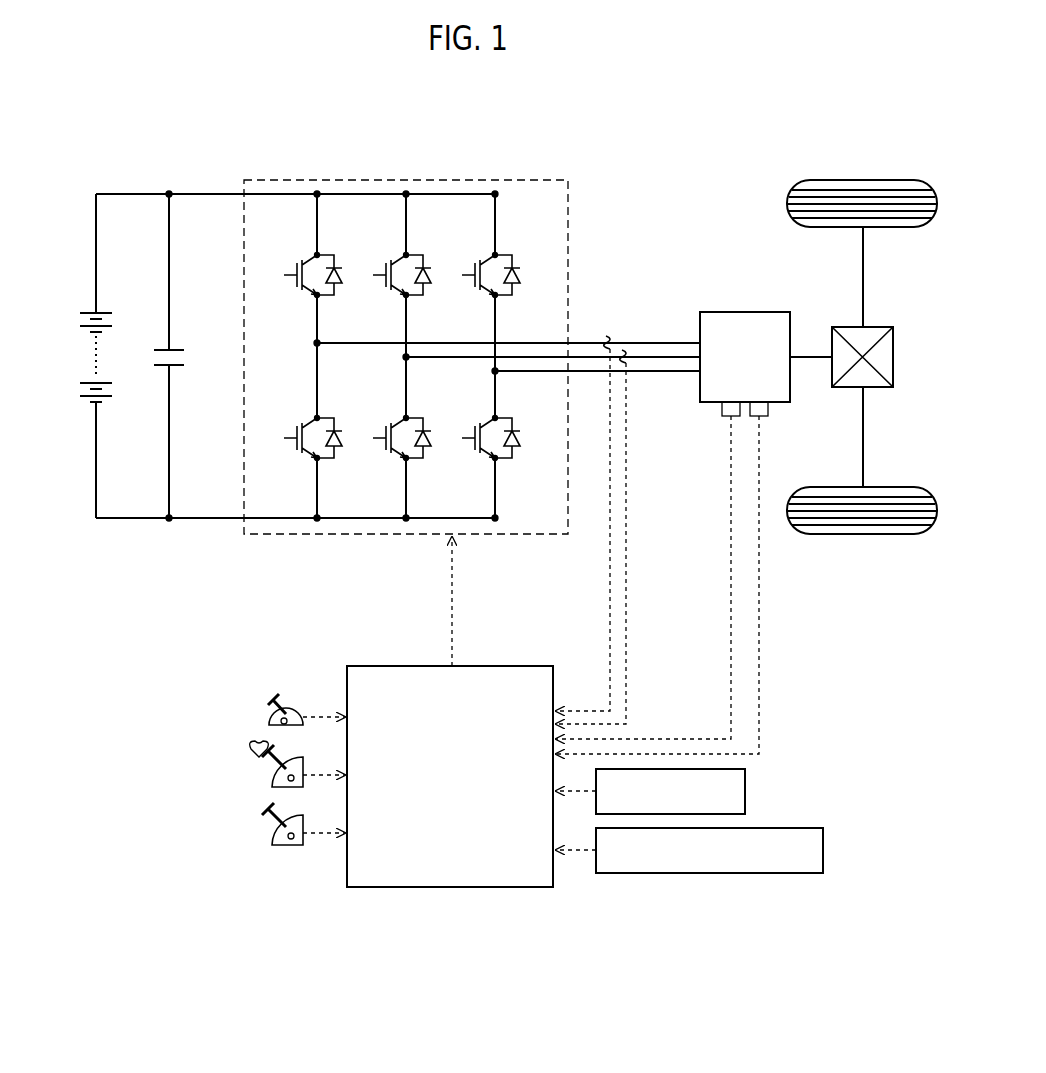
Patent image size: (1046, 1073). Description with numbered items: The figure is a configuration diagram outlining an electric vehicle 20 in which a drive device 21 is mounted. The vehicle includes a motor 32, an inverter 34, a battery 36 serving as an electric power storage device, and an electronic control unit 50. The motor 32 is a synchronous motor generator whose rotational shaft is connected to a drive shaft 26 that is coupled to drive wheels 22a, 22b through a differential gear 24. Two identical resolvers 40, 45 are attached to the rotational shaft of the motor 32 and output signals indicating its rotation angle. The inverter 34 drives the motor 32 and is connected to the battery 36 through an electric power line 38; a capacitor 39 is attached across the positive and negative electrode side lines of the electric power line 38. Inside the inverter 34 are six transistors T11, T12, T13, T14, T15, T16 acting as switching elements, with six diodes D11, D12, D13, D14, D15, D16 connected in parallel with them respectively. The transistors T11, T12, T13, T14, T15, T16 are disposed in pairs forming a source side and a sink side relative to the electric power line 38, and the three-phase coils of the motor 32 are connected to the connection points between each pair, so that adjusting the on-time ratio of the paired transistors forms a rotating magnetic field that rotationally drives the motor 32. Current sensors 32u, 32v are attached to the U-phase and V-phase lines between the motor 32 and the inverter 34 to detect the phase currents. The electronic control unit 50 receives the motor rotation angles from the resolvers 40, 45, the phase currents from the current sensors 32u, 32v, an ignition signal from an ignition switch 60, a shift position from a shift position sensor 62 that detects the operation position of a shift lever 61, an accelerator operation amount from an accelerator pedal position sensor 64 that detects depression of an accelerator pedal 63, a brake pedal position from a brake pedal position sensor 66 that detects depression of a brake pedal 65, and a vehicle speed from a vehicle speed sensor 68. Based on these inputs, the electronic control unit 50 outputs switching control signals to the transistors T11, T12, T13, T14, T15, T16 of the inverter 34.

The electric vehicle 20 is at (672, 150).
The drive device 21 is at (608, 178).
The drive wheel 22a is at (860, 179).
The drive wheel 22b is at (860, 537).
The differential gear 24 is at (875, 326).
The drive shaft 26 is at (800, 350).
The motor 32 is at (748, 311).
The current sensor 32u is at (609, 338).
The current sensor 32v is at (627, 352).
The inverter 34 is at (406, 178).
The battery 36 is at (93, 310).
The electric power line 38 is at (214, 194).
The capacitor 39 is at (163, 348).
The resolver 40 is at (770, 409).
The resolver 45 is at (720, 409).
The electronic control unit 50 is at (481, 664).
The ignition switch 60 is at (747, 791).
The shift lever 61 is at (268, 713).
The shift position sensor 62 is at (282, 721).
The accelerator pedal 63 is at (268, 757).
The accelerator pedal position sensor 64 is at (282, 781).
The brake pedal 65 is at (268, 815).
The brake pedal position sensor 66 is at (282, 839).
The vehicle speed sensor 68 is at (825, 850).
The transistor T11 is at (295, 272).
The transistor T12 is at (384, 272).
The transistor T13 is at (473, 272).
The transistor T14 is at (295, 435).
The transistor T15 is at (384, 435).
The transistor T16 is at (473, 435).
The diode D11 is at (343, 281).
The diode D12 is at (432, 281).
The diode D13 is at (521, 281).
The diode D14 is at (343, 444).
The diode D15 is at (432, 444).
The diode D16 is at (521, 444).